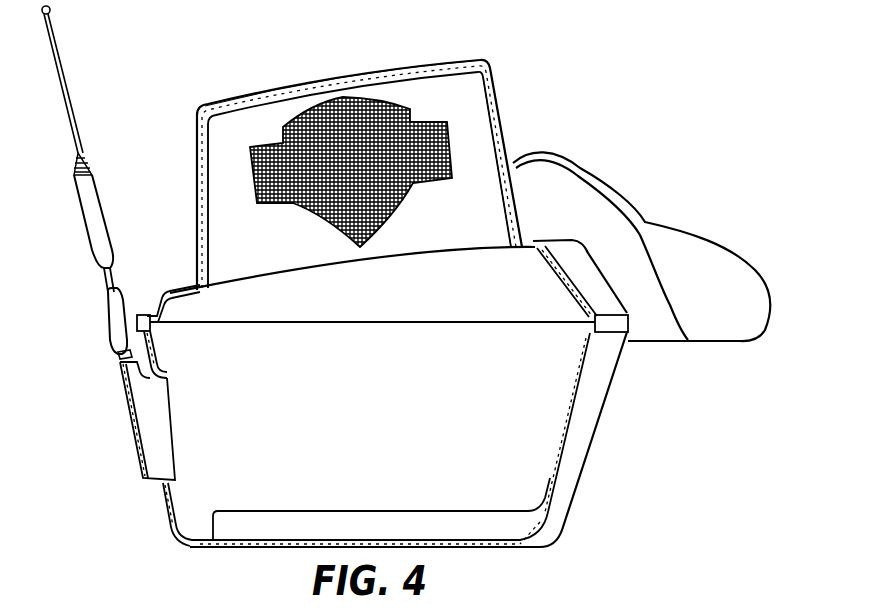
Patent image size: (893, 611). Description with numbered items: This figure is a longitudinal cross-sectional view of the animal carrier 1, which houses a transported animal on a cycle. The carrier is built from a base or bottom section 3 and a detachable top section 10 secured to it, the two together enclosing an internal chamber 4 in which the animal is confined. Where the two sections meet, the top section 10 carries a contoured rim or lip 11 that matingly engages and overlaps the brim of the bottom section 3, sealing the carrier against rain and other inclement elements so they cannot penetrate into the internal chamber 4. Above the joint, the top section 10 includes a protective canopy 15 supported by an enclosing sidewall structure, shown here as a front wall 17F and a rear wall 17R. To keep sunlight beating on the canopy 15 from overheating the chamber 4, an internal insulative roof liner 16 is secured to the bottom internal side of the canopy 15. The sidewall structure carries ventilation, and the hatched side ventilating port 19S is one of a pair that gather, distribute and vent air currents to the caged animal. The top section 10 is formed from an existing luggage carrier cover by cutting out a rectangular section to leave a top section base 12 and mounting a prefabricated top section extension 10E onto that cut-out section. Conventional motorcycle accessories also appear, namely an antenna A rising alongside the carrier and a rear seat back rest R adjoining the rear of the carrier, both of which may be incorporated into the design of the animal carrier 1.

The animal carrier 1 is at (562, 89).
The bottom section 3 is at (597, 402).
The internal chamber 4 is at (210, 480).
The top section 10 is at (446, 64).
The top section extension 10E is at (486, 158).
The contoured rim 11 is at (143, 314).
The top section base 12 is at (182, 284).
The protective canopy 15 is at (280, 88).
The internal insulative roof liner 16 is at (200, 227).
The rear wall 17R is at (197, 160).
The front wall 17F is at (502, 95).
The side ventilating port 19S is at (363, 110).
The antenna A is at (88, 217).
The rear seat back rest R is at (620, 188).